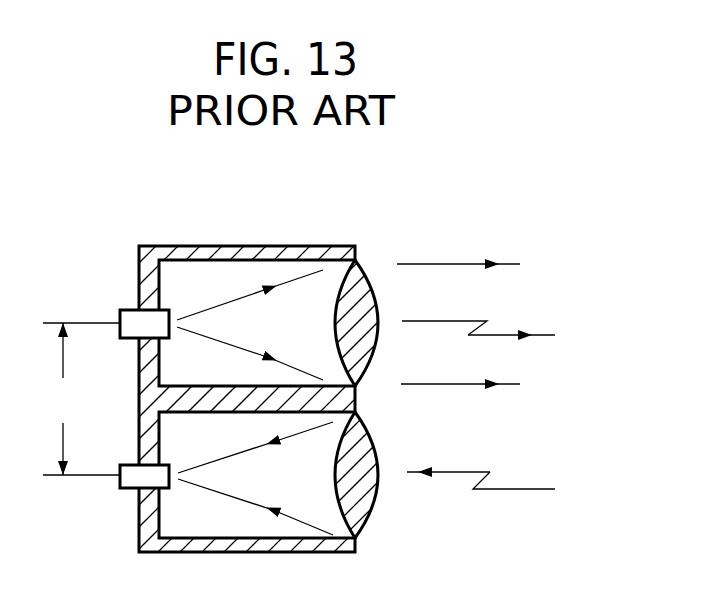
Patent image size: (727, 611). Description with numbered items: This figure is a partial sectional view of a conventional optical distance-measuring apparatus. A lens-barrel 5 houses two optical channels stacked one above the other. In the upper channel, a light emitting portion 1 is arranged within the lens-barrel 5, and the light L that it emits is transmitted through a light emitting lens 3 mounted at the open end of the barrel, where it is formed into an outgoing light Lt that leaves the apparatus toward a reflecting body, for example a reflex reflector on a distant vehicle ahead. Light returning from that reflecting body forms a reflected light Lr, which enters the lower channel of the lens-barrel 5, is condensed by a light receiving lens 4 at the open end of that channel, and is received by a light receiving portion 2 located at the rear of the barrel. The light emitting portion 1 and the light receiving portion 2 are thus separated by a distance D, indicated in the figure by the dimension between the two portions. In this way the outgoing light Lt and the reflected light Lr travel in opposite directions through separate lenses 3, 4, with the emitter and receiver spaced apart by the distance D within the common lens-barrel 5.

The light emitting portion 1 is at (132, 316).
The light receiving portion 2 is at (130, 488).
The light emitting lens 3 is at (357, 281).
The light receiving lens 4 is at (368, 508).
The lens-barrel 5 is at (267, 247).
The light rays L is at (236, 348).
The distance between the light emitting portion and the light receiving portion D is at (81, 399).
The outgoing light Lt is at (497, 324).
The reflected light Lr is at (502, 489).